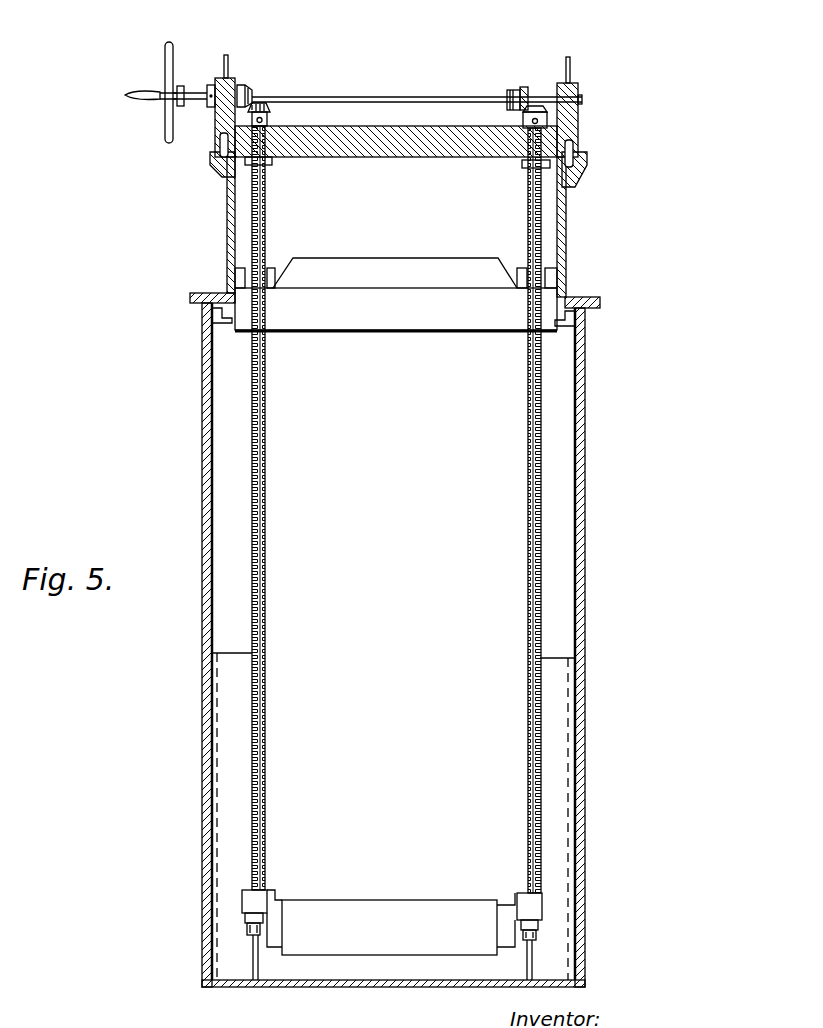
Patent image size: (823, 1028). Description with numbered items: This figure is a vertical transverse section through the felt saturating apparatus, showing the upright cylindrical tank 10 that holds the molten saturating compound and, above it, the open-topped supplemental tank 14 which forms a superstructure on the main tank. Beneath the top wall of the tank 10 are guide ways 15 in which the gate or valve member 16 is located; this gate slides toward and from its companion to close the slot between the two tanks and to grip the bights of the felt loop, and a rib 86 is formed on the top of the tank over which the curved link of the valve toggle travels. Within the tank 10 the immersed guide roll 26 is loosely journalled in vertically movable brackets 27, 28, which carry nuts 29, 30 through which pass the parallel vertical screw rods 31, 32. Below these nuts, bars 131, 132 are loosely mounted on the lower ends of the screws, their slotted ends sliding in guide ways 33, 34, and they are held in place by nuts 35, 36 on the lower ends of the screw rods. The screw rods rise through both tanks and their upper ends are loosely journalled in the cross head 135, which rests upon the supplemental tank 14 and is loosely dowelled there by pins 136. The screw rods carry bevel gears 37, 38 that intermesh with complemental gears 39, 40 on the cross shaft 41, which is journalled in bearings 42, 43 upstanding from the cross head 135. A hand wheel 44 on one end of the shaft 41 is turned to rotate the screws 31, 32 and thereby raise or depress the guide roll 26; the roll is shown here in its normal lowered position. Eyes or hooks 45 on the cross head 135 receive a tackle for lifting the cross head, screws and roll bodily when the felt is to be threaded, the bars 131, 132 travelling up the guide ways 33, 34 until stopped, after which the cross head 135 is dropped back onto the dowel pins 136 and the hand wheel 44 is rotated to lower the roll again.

The tank 10 is at (585, 482).
The supplemental tank 14 is at (565, 232).
The guide ways 15 is at (220, 310).
The gate or valve member 16 is at (398, 322).
The immersed guide roll 26 is at (370, 905).
The bracket 27 is at (272, 905).
The bracket 28 is at (505, 915).
The nut 29 is at (545, 900).
The nut 30 is at (242, 896).
The screw rod 31 is at (528, 395).
The screw rod 32 is at (266, 420).
The guide way 33 is at (555, 714).
The guide way 34 is at (222, 730).
The nut 35 is at (540, 933).
The nut 36 is at (247, 930).
The bevel gear 37 is at (535, 105).
The bevel gear 38 is at (272, 104).
The complemental gear 39 is at (508, 92).
The complemental gear 40 is at (246, 88).
The cross shaft 41 is at (356, 96).
The bearing 42 is at (580, 112).
The bearing 43 is at (220, 78).
The hand wheel 44 is at (163, 50).
The eye or hook 45 is at (227, 55).
The rib 86 is at (355, 270).
The bar 131 is at (540, 924).
The bar 132 is at (245, 918).
The cross head 135 is at (440, 160).
The pin 136 is at (215, 160).